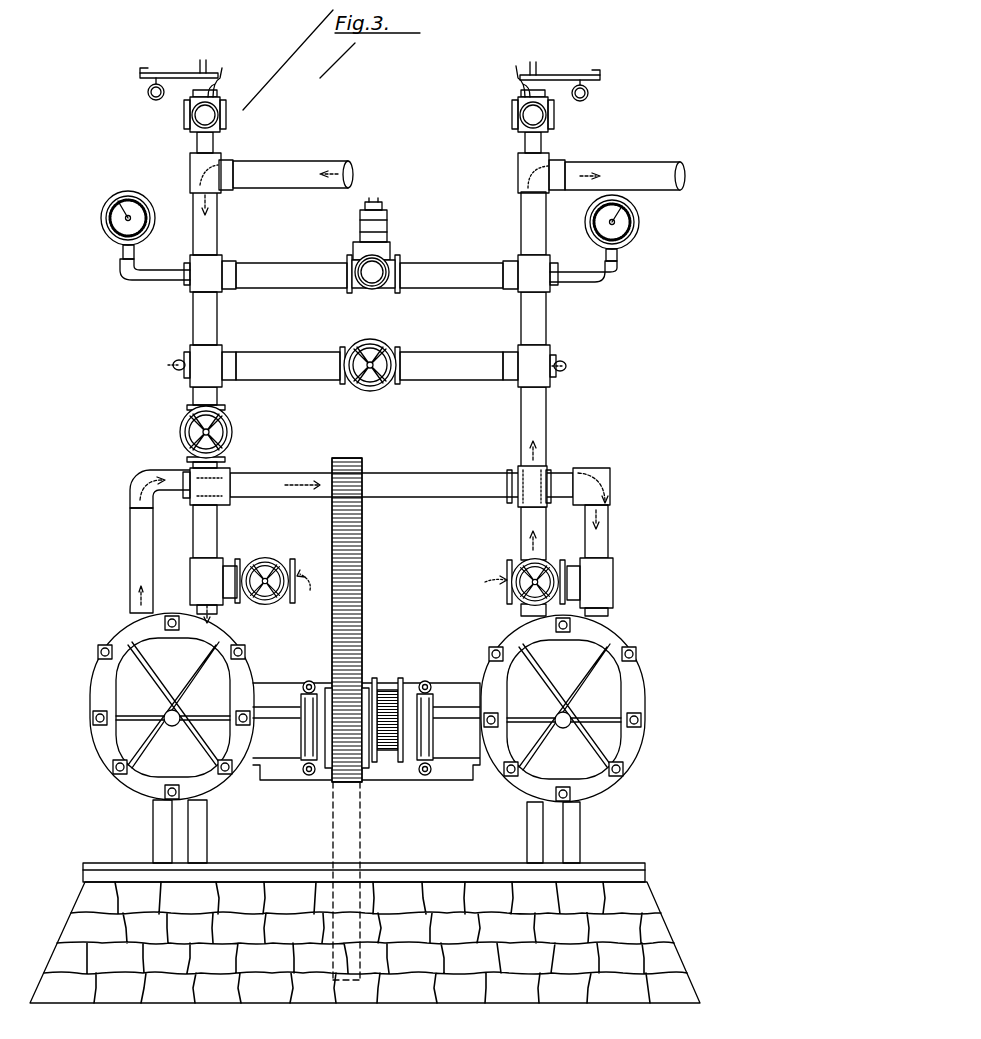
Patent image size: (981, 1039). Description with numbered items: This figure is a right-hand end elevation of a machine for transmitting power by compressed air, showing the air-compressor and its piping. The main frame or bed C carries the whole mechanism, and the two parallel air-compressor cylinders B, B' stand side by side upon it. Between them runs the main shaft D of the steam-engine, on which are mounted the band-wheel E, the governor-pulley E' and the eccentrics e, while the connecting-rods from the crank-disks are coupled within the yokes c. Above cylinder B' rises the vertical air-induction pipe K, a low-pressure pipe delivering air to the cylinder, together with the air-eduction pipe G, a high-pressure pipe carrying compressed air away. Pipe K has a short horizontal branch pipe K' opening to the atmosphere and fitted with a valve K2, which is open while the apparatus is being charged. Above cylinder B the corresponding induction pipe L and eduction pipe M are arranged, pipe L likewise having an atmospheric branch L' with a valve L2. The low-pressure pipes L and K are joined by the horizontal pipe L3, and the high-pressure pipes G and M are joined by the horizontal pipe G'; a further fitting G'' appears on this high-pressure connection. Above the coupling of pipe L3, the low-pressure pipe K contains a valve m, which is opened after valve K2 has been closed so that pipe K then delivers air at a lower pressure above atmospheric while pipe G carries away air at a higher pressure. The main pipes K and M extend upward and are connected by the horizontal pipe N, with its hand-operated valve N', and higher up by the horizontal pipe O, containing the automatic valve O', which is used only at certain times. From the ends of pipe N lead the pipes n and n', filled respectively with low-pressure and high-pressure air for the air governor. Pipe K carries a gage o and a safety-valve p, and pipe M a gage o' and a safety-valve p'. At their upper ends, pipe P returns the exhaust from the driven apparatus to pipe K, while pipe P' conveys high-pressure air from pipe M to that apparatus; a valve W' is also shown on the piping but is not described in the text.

The air-compressor cylinder B is at (563, 739).
The air-compressor cylinder B' is at (172, 738).
The main frame C is at (365, 892).
The main shaft D is at (440, 705).
The band-wheel E is at (361, 620).
The governor-pulley E' is at (391, 701).
The yoke c is at (308, 683).
The eccentric e is at (425, 683).
The air-eduction pipe G is at (124, 560).
The horizontal pipe G' is at (160, 473).
The fitting G'' is at (516, 475).
The air-induction pipe K is at (224, 407).
The branch pipe K' is at (267, 564).
The valve K2 is at (278, 607).
The induction pipe L is at (606, 542).
The branch pipe L' is at (486, 603).
The valve L2 is at (524, 573).
The horizontal pipe L3 is at (412, 478).
The eduction pipe M is at (522, 236).
The valve m is at (232, 437).
The horizontal pipe N is at (346, 358).
The valve N' is at (405, 381).
The pipe n is at (164, 372).
The pipe n' is at (575, 355).
The horizontal pipe O is at (343, 251).
The automatic valve O' is at (373, 285).
The gage o is at (140, 235).
The gage o' is at (604, 238).
The pipe P is at (271, 161).
The pipe P' is at (615, 161).
The safety-valve p is at (184, 99).
The safety-valve p' is at (555, 95).
The relief valve W' is at (382, 214).